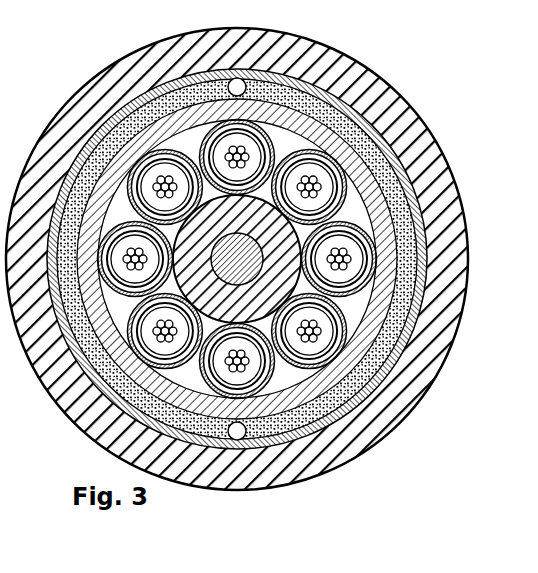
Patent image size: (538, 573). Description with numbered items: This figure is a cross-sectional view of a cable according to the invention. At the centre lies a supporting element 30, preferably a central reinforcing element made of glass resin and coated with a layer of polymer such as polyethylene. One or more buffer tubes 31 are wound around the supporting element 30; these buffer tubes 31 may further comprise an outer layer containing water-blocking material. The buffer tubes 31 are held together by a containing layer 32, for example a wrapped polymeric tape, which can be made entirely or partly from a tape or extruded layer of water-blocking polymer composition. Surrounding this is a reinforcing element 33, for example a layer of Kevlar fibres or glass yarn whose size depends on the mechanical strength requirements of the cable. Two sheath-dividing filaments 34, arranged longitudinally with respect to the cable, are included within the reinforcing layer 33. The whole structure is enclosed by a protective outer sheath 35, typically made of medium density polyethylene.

The supporting element 30 is at (238, 217).
The buffer tubes 31 is at (413, 140).
The containing layer 32 is at (404, 348).
The reinforcing element 33 is at (392, 377).
The sheath-dividing filaments 34 is at (262, 442).
The protective outer sheath 35 is at (330, 462).